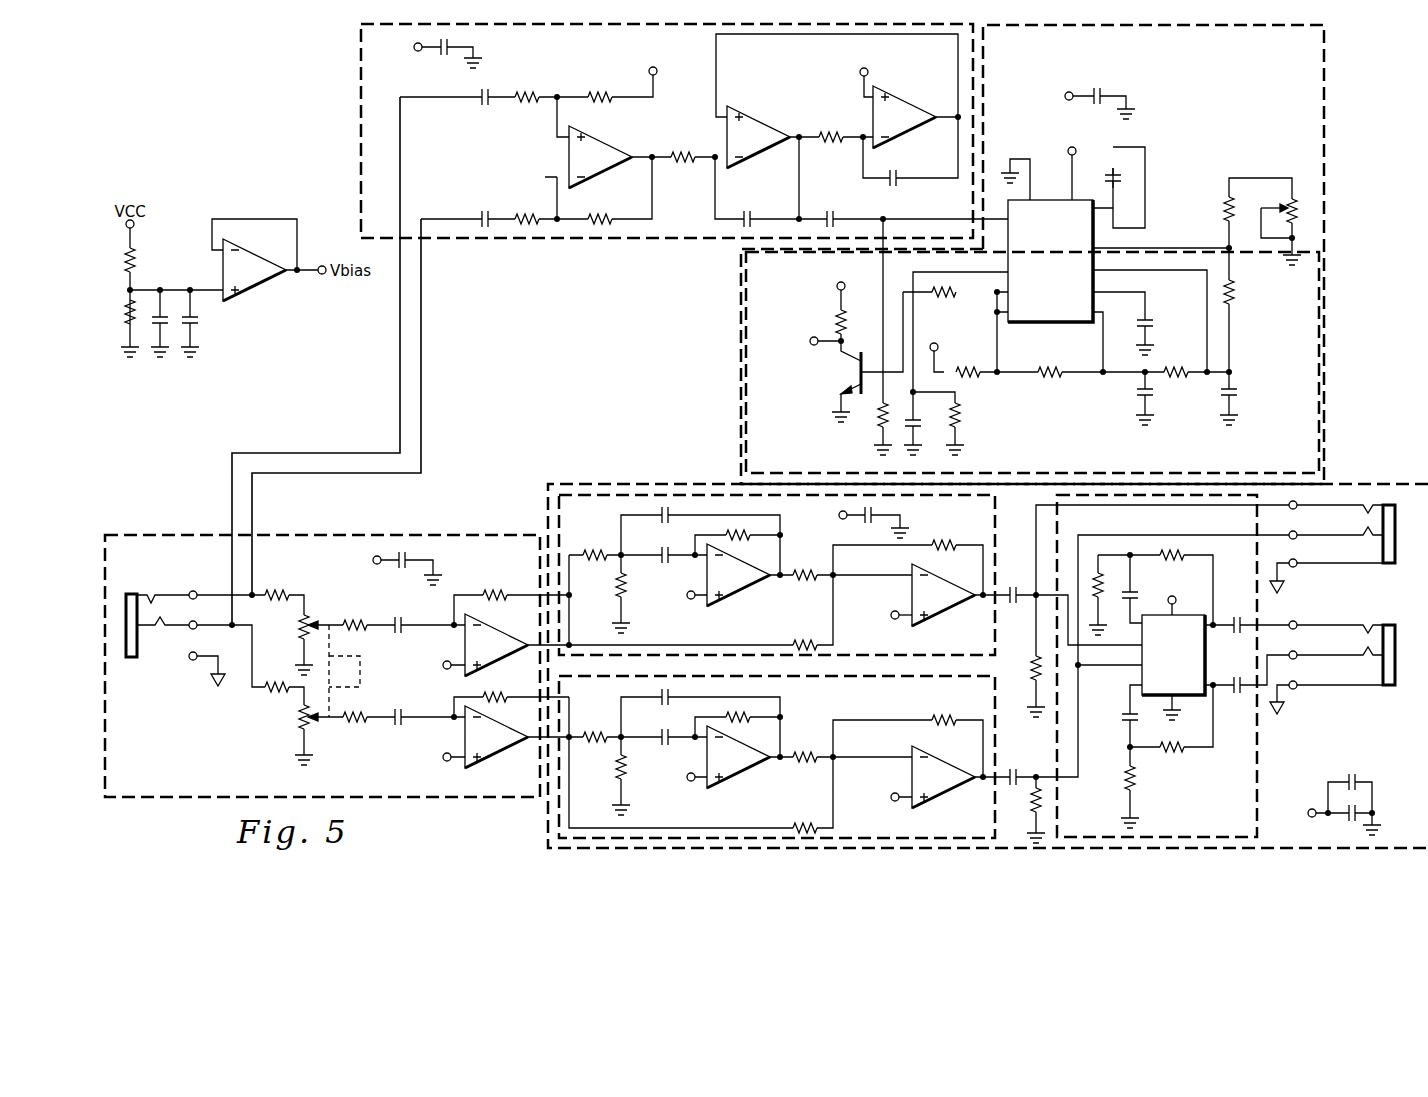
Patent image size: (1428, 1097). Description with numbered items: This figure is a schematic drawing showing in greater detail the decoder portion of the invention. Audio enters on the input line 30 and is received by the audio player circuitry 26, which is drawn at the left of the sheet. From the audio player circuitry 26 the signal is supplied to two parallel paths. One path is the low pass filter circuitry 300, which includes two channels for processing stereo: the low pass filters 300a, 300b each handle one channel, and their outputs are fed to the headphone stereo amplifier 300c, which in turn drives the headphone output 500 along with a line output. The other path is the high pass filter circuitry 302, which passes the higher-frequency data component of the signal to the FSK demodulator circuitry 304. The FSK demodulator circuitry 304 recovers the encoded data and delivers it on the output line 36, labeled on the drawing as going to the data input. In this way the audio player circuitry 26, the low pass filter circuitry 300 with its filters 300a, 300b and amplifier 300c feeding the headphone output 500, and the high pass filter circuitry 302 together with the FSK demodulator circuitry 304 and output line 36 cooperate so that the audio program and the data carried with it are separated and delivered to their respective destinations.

The audio player circuitry 26 is at (148, 572).
The input line 30 is at (163, 727).
The output line 36 is at (812, 350).
The low pass filter circuitry 300 is at (1378, 482).
The low pass filter 300a is at (973, 708).
The low pass filter 300b is at (973, 526).
The headphone stereo amplifier 300c is at (1233, 824).
The high pass filter circuitry 302 is at (360, 120).
The FSK demodulator circuitry 304 is at (1294, 70).
The headphone output 500 is at (1386, 748).